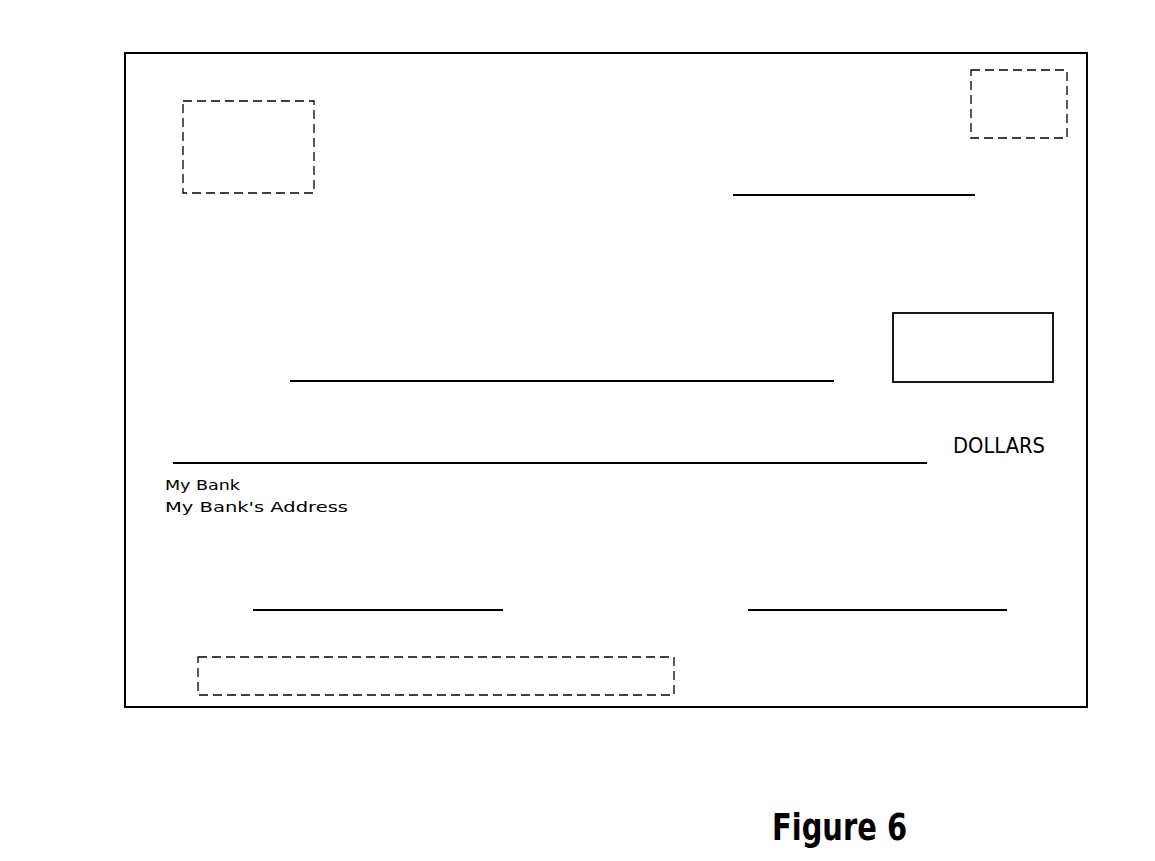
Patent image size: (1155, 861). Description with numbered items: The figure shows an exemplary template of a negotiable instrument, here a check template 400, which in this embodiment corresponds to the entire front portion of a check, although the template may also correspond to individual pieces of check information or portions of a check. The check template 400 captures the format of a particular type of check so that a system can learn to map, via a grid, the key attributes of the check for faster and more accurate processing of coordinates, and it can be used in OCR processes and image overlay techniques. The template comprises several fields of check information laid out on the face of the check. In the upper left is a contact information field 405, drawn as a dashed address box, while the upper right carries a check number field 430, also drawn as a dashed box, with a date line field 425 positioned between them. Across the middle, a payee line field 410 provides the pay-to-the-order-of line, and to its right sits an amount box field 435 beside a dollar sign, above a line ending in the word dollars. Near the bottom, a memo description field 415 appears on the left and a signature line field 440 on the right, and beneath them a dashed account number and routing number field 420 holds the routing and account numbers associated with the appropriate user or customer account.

The check template 400 is at (568, 115).
The contact information field 405 is at (167, 100).
The payee line field 410 is at (167, 317).
The memo description field 415 is at (175, 558).
The account number and routing number field 420 is at (683, 722).
The date line field 425 is at (678, 130).
The check number field 430 is at (1067, 150).
The amount box field 435 is at (1053, 305).
The signature line field 440 is at (1007, 545).